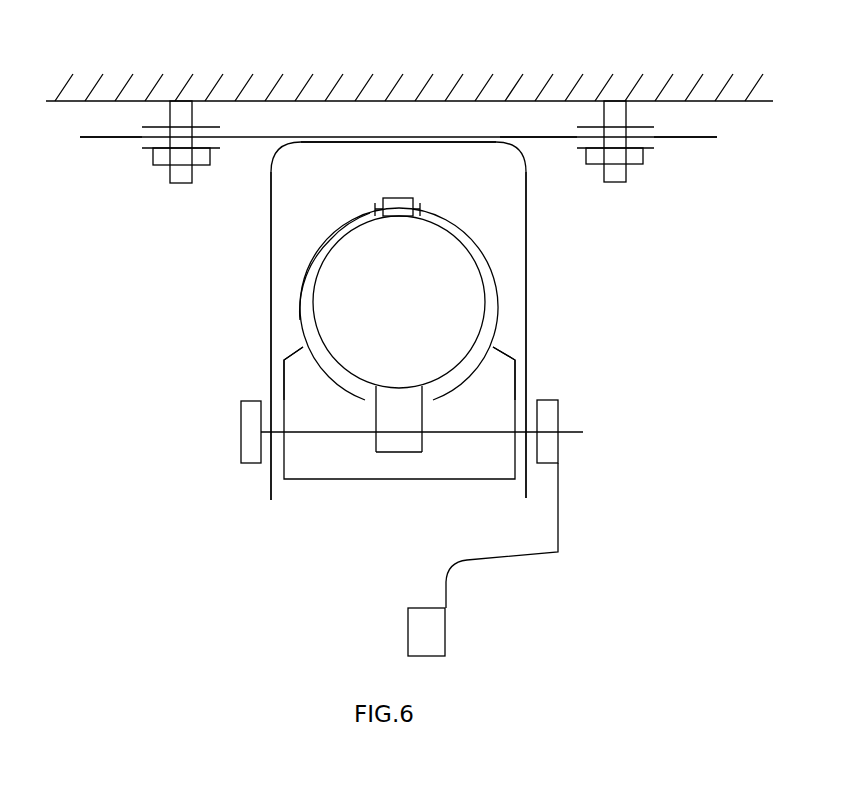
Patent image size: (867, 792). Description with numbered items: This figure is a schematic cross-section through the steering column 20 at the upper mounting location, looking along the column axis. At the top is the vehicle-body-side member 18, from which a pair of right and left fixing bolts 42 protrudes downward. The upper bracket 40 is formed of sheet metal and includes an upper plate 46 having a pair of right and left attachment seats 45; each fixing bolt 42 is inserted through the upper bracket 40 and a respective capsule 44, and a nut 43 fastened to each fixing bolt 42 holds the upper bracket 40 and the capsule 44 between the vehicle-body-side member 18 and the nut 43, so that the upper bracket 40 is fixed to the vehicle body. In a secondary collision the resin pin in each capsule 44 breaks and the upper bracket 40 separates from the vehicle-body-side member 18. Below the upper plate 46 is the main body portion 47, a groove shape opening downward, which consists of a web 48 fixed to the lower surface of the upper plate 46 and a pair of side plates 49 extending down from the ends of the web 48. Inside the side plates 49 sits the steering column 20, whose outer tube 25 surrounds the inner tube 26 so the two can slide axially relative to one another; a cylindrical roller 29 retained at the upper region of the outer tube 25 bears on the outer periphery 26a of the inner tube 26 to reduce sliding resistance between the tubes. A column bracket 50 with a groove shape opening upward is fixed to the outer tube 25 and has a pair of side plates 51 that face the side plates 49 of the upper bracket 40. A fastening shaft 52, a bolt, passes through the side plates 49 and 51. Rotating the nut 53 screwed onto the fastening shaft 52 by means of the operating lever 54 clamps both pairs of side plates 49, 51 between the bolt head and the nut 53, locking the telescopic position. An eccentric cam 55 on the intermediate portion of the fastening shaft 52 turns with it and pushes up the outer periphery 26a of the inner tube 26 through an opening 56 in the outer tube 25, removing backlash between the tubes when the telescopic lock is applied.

The vehicle-body-side member 18 is at (262, 92).
The steering column 20 is at (472, 237).
The outer tube 25 is at (442, 215).
The inner tube 26 is at (310, 278).
The outer periphery of the inner tube 26a is at (341, 235).
The cylindrical roller 29 is at (398, 205).
The upper bracket 40 is at (343, 134).
The fixing bolt 42 is at (178, 182).
The nut 43 is at (203, 162).
The capsule 44 is at (157, 125).
The attachment seat 45 is at (90, 141).
The upper plate 46 is at (548, 133).
The main body portion 47 is at (271, 323).
The web 48 is at (360, 144).
The side plate 49 is at (271, 265).
The column bracket 50 is at (385, 482).
The side plate 51 is at (285, 400).
The fastening shaft 52 is at (245, 442).
The nut 53 is at (550, 412).
The operating lever 54 is at (437, 633).
The eccentric cam 55 is at (380, 445).
The opening 56 is at (428, 400).